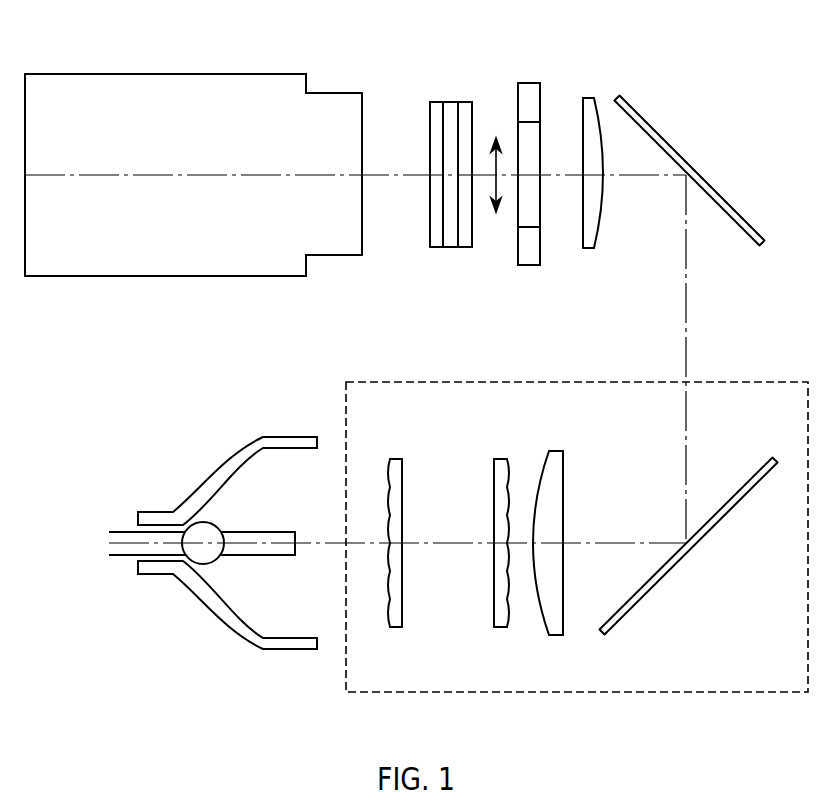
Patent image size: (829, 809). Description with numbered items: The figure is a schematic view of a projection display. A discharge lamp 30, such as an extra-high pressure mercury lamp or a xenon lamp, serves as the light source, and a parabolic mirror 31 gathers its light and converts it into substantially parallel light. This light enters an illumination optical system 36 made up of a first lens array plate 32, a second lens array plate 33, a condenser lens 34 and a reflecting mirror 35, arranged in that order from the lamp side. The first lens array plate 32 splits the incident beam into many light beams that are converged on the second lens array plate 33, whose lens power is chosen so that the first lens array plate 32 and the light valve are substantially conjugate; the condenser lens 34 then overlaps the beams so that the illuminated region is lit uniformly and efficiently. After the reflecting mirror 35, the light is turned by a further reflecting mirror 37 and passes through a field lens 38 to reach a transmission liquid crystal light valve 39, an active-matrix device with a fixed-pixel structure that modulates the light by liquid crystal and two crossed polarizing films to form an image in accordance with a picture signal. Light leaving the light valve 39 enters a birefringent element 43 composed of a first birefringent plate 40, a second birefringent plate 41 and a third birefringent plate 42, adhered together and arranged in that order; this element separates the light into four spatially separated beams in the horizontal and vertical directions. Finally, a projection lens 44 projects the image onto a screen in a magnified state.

The discharge lamp 30 is at (118, 556).
The parabolic mirror 31 is at (223, 472).
The first lens array plate 32 is at (399, 459).
The second lens array plate 33 is at (503, 459).
The condenser lens 34 is at (558, 451).
The reflecting mirror 35 is at (657, 580).
The illumination optical system 36 is at (747, 382).
The reflecting mirror 37 is at (700, 175).
The field lens 38 is at (592, 98).
The transmission liquid crystal light valve 39 is at (532, 83).
The first birefringent plate 40 is at (467, 102).
The second birefringent plate 41 is at (450, 102).
The third birefringent plate 42 is at (437, 102).
The birefringent element 43 is at (505, 44).
The projection lens 44 is at (228, 74).